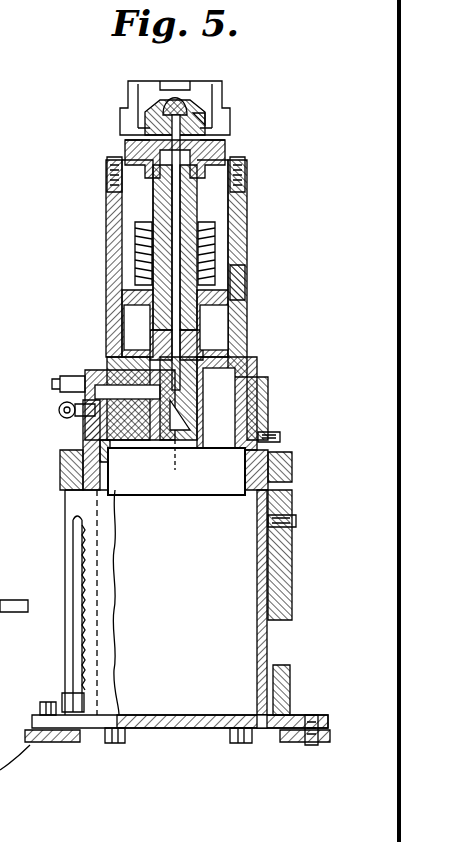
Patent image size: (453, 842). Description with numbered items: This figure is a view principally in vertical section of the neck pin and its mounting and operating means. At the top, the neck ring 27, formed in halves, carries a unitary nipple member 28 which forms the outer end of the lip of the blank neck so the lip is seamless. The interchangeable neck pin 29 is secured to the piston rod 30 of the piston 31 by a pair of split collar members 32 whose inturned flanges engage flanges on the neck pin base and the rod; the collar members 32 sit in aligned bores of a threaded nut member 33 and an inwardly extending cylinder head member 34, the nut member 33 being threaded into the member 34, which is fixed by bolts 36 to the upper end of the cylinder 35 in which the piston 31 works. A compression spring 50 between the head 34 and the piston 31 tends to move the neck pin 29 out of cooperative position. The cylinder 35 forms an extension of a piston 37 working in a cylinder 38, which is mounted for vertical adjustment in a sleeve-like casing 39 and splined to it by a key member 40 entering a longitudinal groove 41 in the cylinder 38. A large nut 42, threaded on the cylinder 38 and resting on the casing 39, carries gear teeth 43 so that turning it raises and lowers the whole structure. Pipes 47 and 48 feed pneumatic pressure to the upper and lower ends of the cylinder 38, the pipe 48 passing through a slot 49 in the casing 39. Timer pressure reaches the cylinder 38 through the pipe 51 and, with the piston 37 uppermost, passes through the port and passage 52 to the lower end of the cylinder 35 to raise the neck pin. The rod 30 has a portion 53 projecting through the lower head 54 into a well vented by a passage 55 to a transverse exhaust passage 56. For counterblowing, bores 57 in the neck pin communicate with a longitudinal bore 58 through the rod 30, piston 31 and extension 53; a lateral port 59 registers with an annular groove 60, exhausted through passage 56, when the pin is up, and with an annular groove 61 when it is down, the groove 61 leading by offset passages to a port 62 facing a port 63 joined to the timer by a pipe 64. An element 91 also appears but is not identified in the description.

The neck ring 27 is at (205, 90).
The nipple member 28 is at (150, 118).
The neck pin 29 is at (172, 105).
The lateral and longitudinal bores 57 is at (205, 118).
The threaded nut member 33 is at (125, 148).
The split collar members 32 is at (150, 140).
The piston rod 30 is at (118, 205).
The cylinder head member 34 is at (222, 203).
The cylinder 35 is at (240, 270).
The bolts 36 is at (245, 160).
The portion of piston rod 53 is at (190, 326).
The lower head 54 is at (213, 358).
The piston 31 is at (112, 303).
The longitudinal bore 58 is at (152, 232).
The compression spring 50 is at (240, 254).
The exhaust passage 56 is at (107, 357).
The port and passage 52 is at (103, 372).
The pipe 51 is at (65, 385).
The pipe 64 is at (59, 410).
The laterally extending port 59 is at (192, 372).
The annular groove 60 is at (240, 362).
The pipe 47 is at (272, 432).
The port 63 is at (83, 432).
The large nut 42 is at (60, 455).
The port 62 is at (116, 450).
The annular groove 61 is at (196, 460).
The passage 55 is at (169, 460).
The piston 37 is at (272, 447).
The gear teeth 43 is at (292, 462).
The sleeve-like casing 39 is at (72, 515).
The cylinder 38 is at (270, 630).
The key member 40 is at (294, 520).
The slot 49 is at (80, 565).
The pipe 48 is at (70, 695).
The bracket 91 is at (0, 600).
The longitudinal groove 41 is at (262, 733).